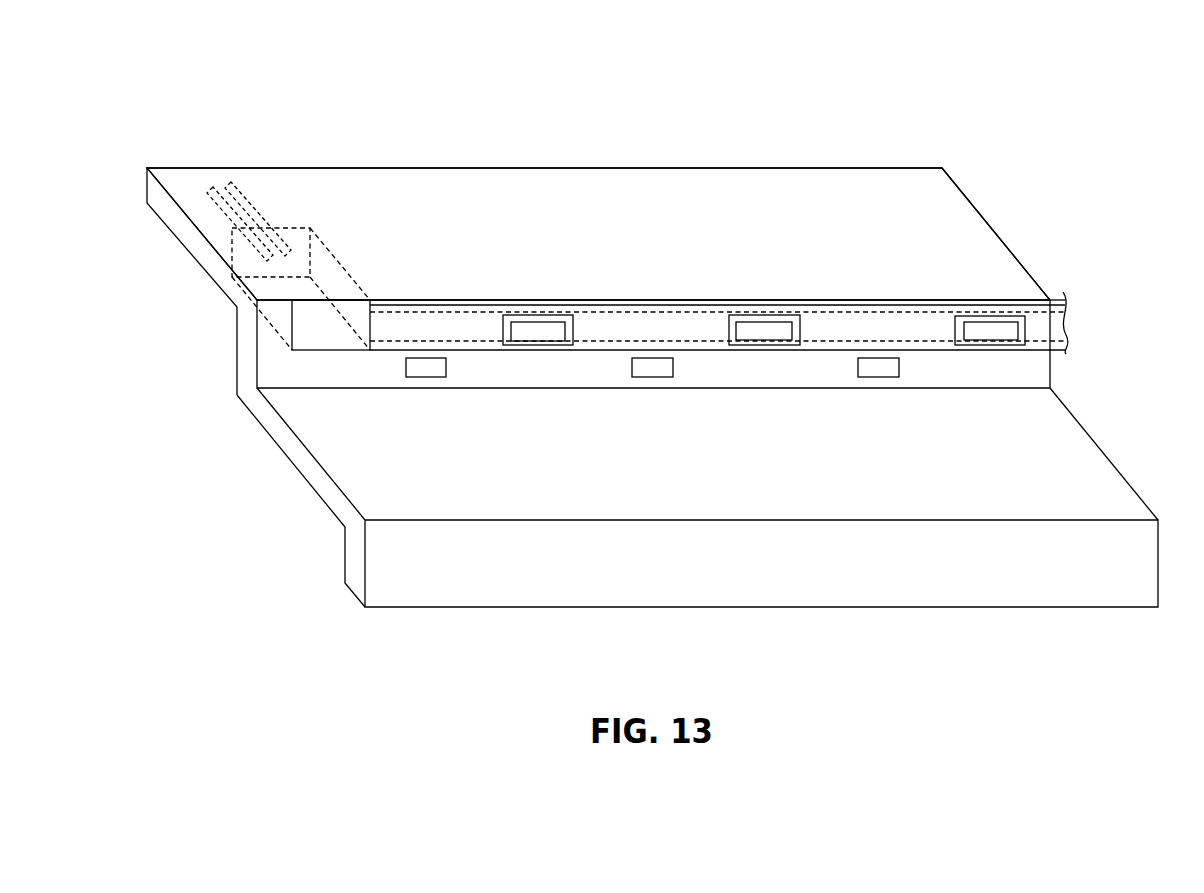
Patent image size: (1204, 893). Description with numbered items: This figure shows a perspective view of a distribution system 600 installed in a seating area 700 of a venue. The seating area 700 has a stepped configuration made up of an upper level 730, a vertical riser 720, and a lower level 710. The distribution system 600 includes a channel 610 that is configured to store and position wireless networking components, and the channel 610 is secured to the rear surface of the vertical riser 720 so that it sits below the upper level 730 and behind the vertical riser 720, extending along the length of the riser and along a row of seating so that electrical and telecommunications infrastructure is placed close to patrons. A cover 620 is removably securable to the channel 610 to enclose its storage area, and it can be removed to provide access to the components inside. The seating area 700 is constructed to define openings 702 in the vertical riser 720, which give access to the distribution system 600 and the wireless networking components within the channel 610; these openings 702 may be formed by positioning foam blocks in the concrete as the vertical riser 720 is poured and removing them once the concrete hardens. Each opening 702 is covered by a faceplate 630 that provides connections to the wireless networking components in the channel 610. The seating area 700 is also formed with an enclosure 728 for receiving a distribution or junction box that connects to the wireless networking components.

The seating area 700 is at (766, 130).
The lower level 710 is at (1085, 462).
The vertical riser 720 is at (1038, 377).
The upper level 730 is at (877, 192).
The distribution system 600 is at (452, 328).
The channel 610 is at (917, 332).
The cover 620 is at (292, 322).
The faceplate 630 is at (757, 330).
The opening 702 is at (1028, 327).
The enclosure 728 is at (332, 257).